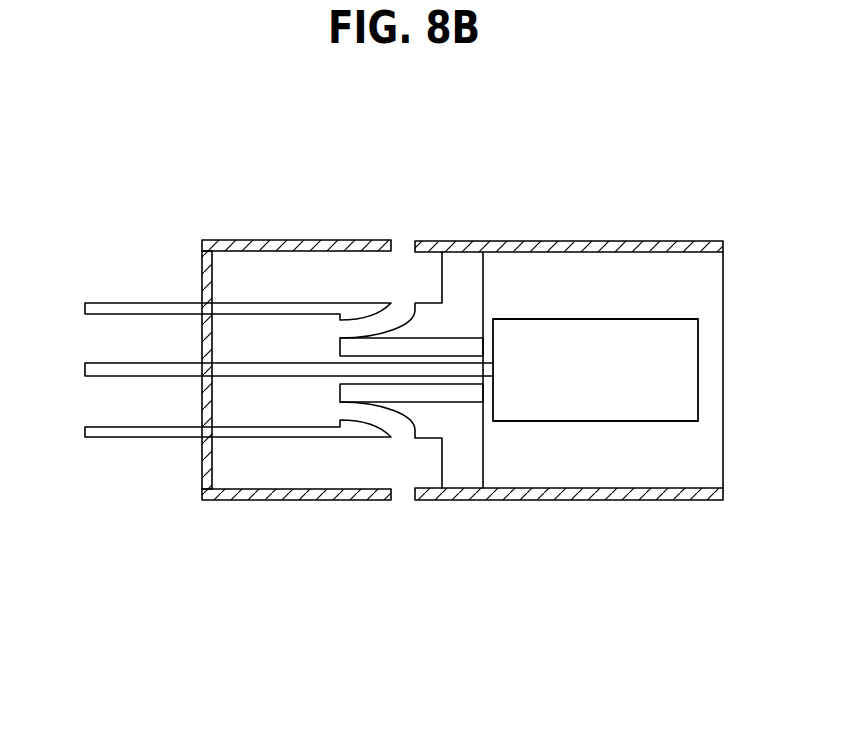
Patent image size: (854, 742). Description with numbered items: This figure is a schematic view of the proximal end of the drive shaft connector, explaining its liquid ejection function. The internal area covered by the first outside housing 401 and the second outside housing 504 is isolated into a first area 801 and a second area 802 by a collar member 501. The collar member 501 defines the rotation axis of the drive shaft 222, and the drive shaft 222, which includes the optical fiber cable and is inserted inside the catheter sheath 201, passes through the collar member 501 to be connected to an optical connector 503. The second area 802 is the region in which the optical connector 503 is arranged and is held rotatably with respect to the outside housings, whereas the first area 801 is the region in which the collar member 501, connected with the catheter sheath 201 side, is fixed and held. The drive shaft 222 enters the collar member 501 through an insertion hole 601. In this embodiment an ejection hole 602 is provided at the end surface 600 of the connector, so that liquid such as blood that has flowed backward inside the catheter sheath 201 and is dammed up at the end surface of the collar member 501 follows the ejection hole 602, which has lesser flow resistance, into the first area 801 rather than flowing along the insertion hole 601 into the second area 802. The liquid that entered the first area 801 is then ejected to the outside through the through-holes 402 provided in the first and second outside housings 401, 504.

The catheter sheath 201 is at (117, 303).
The drive shaft 222 is at (95, 378).
The first outside housing 401 is at (316, 241).
The second outside housing 504 is at (296, 300).
The collar member 501 is at (400, 322).
The optical connector 503 is at (568, 357).
The end surface 600 is at (340, 392).
The insertion hole 601 is at (337, 384).
The ejection hole 602 is at (338, 410).
The first area 801 is at (232, 278).
The second area 802 is at (677, 278).
The through-holes 402 is at (403, 498).